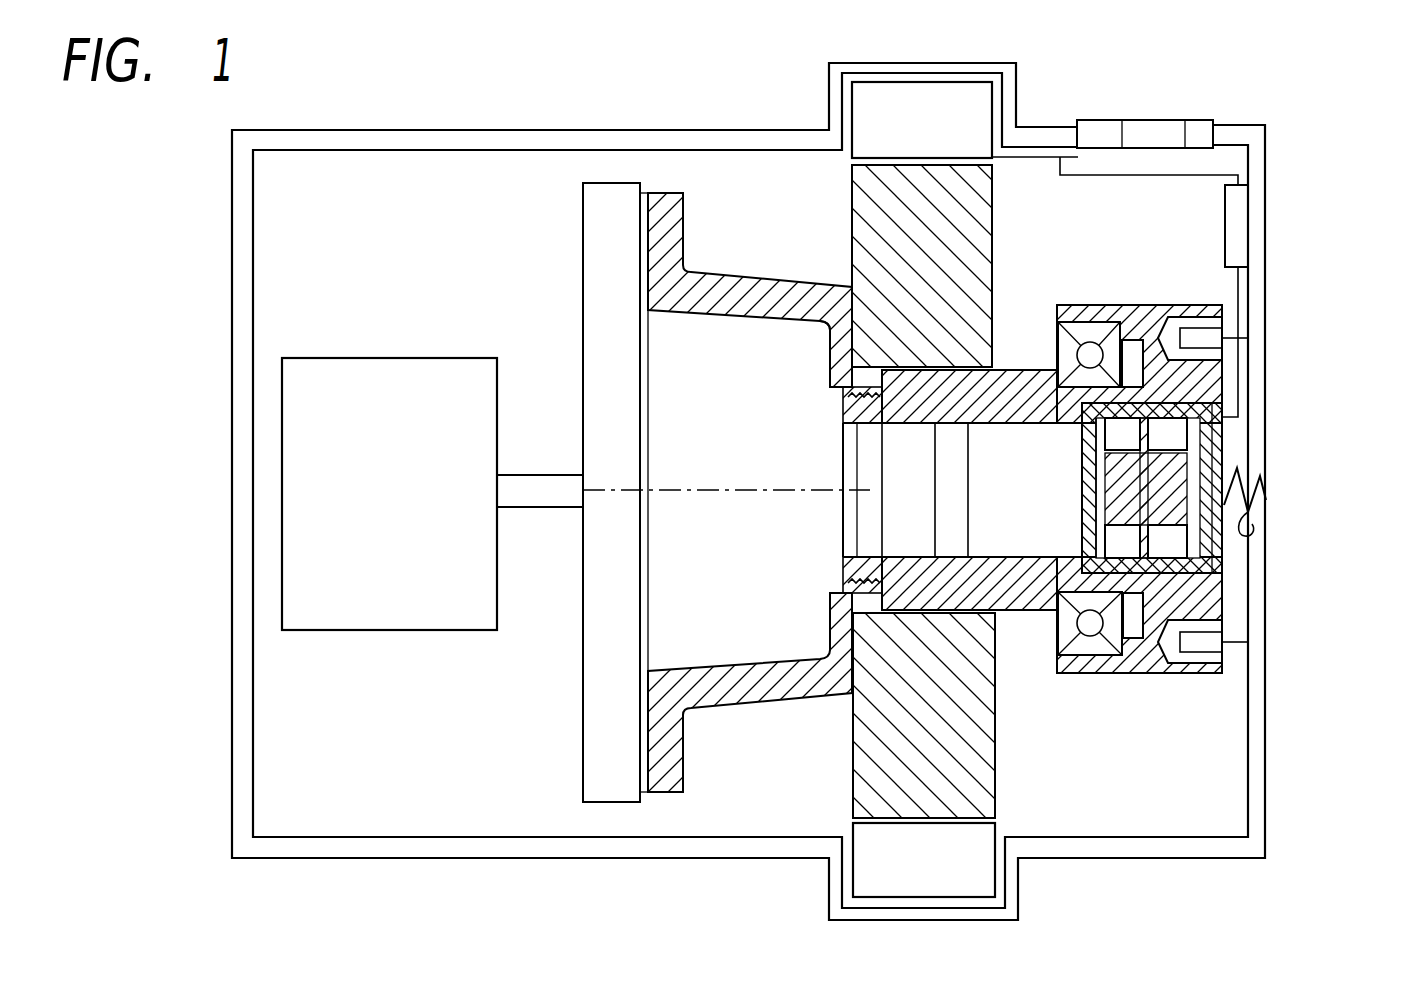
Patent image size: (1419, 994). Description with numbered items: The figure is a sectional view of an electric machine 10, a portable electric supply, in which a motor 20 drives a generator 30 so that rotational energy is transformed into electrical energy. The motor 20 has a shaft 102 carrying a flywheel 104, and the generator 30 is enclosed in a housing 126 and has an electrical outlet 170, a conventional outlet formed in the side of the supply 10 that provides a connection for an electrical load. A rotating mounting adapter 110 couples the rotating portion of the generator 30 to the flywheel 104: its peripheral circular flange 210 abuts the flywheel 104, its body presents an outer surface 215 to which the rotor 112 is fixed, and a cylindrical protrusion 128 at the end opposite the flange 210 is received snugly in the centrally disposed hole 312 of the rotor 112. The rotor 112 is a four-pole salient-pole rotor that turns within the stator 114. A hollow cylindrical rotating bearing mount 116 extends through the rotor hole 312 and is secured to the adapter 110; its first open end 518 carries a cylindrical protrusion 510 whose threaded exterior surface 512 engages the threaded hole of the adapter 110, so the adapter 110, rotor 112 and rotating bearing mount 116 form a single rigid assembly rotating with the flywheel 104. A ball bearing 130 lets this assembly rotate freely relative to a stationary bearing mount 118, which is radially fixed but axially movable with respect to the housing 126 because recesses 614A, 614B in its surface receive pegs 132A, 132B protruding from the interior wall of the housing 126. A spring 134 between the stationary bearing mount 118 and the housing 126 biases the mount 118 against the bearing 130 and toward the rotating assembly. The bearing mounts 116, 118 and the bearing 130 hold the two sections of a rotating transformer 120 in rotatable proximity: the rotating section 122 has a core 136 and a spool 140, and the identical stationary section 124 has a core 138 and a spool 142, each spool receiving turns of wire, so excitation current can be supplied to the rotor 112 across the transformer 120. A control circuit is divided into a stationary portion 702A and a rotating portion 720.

The electric machine 10 is at (1318, 203).
The motor 20 is at (332, 358).
The generator 30 is at (1043, 224).
The shaft 102 is at (522, 475).
The flywheel 104 is at (583, 273).
The rotor mounting adapter 110 is at (773, 275).
The rotor 112 is at (993, 205).
The stator 114 is at (993, 107).
The rotating bearing mount 116 is at (1003, 370).
The stationary bearing mount 118 is at (1128, 305).
The transformer 120 is at (1215, 493).
The rotating section 122 is at (1082, 468).
The stationary section 124 is at (1217, 458).
The housing 126 is at (1267, 753).
The cylindrical protrusion 128 is at (843, 397).
The bearing 130 is at (1090, 342).
The peg 132A is at (1243, 338).
The peg 132B is at (1245, 642).
The spring 134 is at (1247, 533).
The rotating core 136 is at (1097, 515).
The stationary core 138 is at (1198, 552).
The spool 140 is at (1100, 433).
The spool 142 is at (1220, 425).
The electrical outlet 170 is at (1213, 119).
The peripheral circular flange 210 is at (683, 222).
The outer surface 215 is at (830, 328).
The rotor hole 312 is at (838, 396).
The cylindrical protrusion 510 is at (845, 420).
The threaded exterior surface 512 is at (855, 588).
The first open end 518 is at (843, 520).
The recess 614A is at (1224, 358).
The recess 614B is at (1223, 657).
The stationary portion 702A is at (1225, 225).
The rotating portion 720 is at (935, 538).